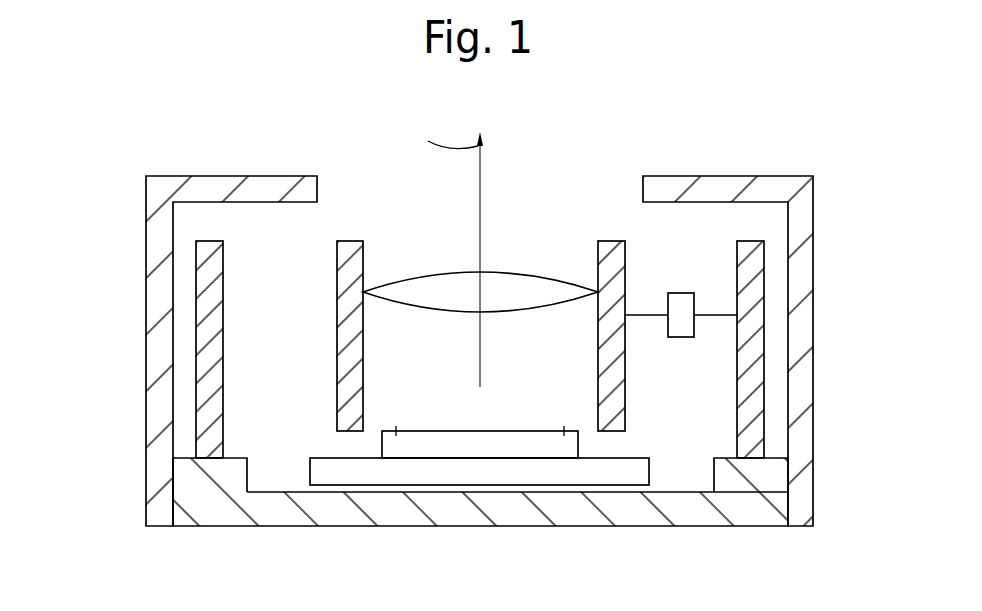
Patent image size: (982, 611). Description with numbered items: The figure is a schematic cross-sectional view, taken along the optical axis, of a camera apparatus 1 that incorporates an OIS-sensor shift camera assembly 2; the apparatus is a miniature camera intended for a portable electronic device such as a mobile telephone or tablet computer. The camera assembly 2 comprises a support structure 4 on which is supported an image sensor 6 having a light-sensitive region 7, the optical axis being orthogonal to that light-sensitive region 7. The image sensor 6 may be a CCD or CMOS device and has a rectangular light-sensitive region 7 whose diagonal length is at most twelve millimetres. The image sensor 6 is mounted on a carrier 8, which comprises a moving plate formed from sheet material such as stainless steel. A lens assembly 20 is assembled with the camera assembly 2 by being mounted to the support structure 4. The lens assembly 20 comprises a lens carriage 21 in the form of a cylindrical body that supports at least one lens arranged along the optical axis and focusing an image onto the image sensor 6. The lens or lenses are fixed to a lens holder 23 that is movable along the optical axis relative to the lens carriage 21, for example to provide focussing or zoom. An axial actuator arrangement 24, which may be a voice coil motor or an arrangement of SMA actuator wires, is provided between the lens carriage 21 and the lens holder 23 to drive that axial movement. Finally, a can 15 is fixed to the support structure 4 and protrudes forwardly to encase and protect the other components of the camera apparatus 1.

The camera apparatus 1 is at (128, 354).
The camera assembly 2 is at (226, 485).
The support structure 4 is at (735, 487).
The image sensor 6 is at (443, 445).
The light-sensitive region 7 is at (445, 424).
The carrier 8 is at (560, 487).
The can 15 is at (800, 380).
The lens assembly 20 is at (524, 243).
The lens carriage 21 is at (758, 259).
The lens holder 23 is at (610, 250).
The axial actuator arrangement 24 is at (683, 303).